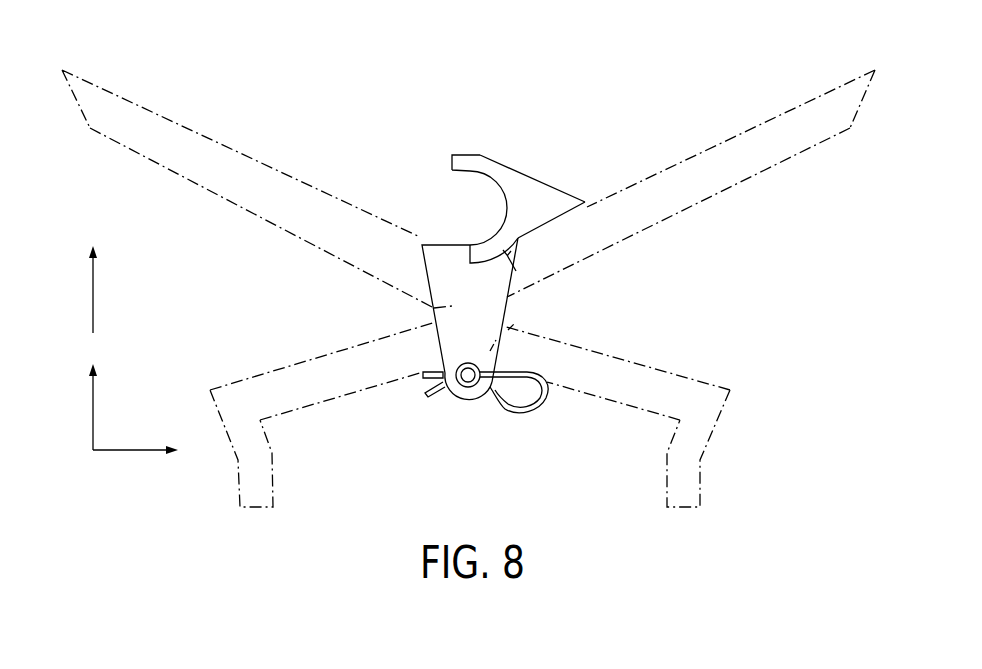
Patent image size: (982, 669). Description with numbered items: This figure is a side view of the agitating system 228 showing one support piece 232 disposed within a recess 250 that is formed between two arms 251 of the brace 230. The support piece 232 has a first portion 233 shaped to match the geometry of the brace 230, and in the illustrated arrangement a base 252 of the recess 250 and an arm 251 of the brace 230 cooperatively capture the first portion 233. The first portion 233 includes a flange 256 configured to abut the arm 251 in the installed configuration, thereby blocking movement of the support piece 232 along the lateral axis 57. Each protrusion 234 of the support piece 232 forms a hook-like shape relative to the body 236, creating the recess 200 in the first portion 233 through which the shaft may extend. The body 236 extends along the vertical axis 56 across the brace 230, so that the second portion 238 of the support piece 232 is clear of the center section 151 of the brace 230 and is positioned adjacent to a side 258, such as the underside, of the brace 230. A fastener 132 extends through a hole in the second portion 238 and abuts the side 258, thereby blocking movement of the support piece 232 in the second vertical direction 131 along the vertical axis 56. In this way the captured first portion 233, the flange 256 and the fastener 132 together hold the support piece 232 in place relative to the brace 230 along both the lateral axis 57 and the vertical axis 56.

The agitating system 228 is at (752, 48).
The brace 230 is at (704, 133).
The arms 251 is at (210, 130).
The recess 250 is at (478, 238).
The support piece 232 is at (491, 170).
The protrusions 234 is at (465, 153).
The first portion 233 is at (493, 160).
The flange 256 is at (538, 188).
The recess 200 is at (457, 187).
The body 236 is at (430, 305).
The base 252 is at (517, 272).
The center section 151 is at (430, 318).
The side 258 is at (510, 326).
The second portion 238 is at (453, 397).
The fastener 132 is at (489, 394).
The second vertical direction 131 is at (93, 296).
The vertical axis 56 is at (93, 413).
The lateral axis 57 is at (128, 450).